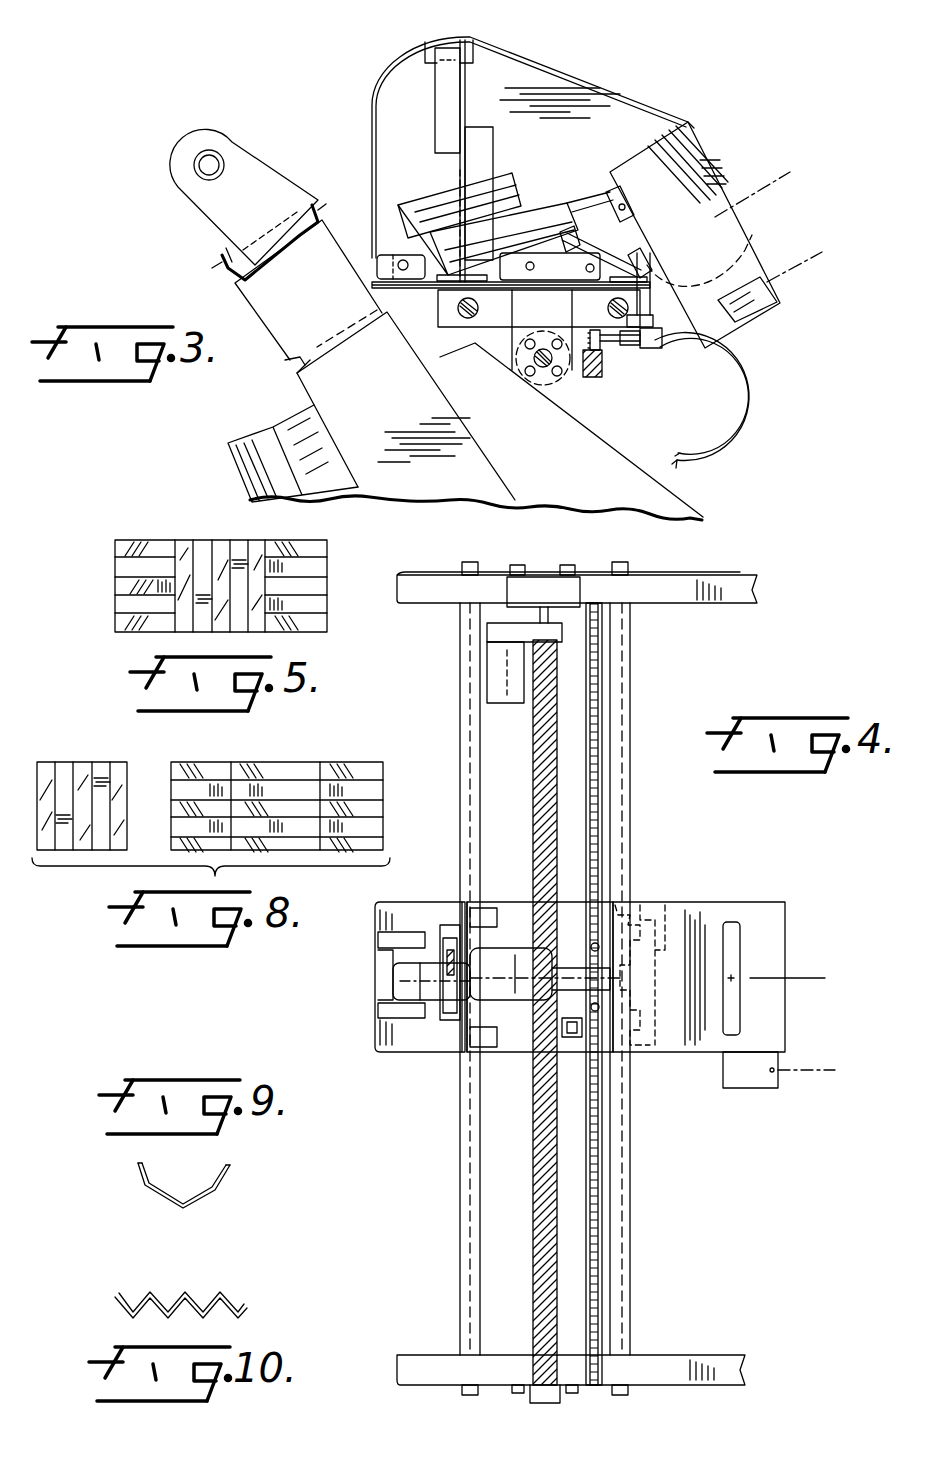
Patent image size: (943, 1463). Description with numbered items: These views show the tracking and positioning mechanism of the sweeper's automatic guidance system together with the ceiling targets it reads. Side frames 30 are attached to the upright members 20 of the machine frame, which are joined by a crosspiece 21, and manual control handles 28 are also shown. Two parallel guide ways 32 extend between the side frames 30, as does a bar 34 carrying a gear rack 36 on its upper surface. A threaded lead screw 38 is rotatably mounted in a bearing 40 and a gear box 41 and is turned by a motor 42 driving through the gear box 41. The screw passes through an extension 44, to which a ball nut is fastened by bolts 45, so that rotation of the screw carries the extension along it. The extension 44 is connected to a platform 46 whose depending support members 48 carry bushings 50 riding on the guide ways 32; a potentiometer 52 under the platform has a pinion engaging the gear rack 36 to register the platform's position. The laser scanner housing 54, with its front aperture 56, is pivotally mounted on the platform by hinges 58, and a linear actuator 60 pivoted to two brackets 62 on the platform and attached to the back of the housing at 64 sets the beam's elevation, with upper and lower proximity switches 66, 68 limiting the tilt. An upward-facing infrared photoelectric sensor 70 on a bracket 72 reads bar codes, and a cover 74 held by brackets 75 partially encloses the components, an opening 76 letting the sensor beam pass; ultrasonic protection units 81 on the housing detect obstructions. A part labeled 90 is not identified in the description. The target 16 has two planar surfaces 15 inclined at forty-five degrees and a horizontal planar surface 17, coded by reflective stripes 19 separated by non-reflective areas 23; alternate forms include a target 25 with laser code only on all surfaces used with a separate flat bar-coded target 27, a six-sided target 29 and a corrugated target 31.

In FIG. 5, the planar surfaces 15 is at (150, 540).
In FIG. 5, the target 16 is at (102, 531).
In FIG. 5, the horizontal planar surface 17 is at (203, 540).
In FIG. 5, the reflective stripes 19 is at (256, 550).
In FIG. 8, the reflective stripes 19 is at (85, 760).
In FIG. 3, the upright members 20 is at (427, 486).
In FIG. 3, the crosspiece 21 is at (296, 366).
In FIG. 5, the non-reflective areas 23 is at (318, 600).
In FIG. 8, the non-reflective areas 23 is at (175, 828).
In FIG. 8, the target 25 is at (300, 762).
In FIG. 8, the flat target 27 is at (122, 775).
In FIG. 3, the handles 28 is at (197, 160).
In FIG. 9, the six-sided target 29 is at (220, 1196).
In FIG. 3, the side frames 30 is at (700, 498).
In FIG. 4, the side frames 30 is at (737, 572).
In FIG. 10, the corrugated target 31 is at (248, 1312).
In FIG. 3, the guide ways 32 is at (607, 308).
In FIG. 4, the guide ways 32 is at (458, 1170).
In FIG. 3, the bar 34 is at (596, 378).
In FIG. 4, the bar 34 is at (605, 1275).
In FIG. 3, the gear rack 36 is at (600, 352).
In FIG. 4, the gear rack 36 is at (600, 1148).
In FIG. 3, the lead screw 38 is at (598, 372).
In FIG. 4, the lead screw 38 is at (536, 806).
In FIG. 4, the bearing 40 is at (535, 1385).
In FIG. 4, the gear box 41 is at (494, 635).
In FIG. 4, the motor 42 is at (500, 695).
In FIG. 3, the extension 44 is at (543, 386).
In FIG. 3, the bolts 45 is at (531, 378).
In FIG. 3, the platform 46 is at (374, 293).
In FIG. 4, the platform 46 is at (377, 1036).
In FIG. 3, the support members 48 is at (410, 340).
In FIG. 3, the bushings 50 is at (466, 318).
In FIG. 3, the potentiometer 52 is at (670, 385).
In FIG. 3, the laser scanner housing 54 is at (688, 168).
In FIG. 4, the laser scanner housing 54 is at (690, 905).
In FIG. 4, the front aperture 56 is at (735, 925).
In FIG. 3, the hinges 58 is at (642, 254).
In FIG. 3, the linear actuator 60 is at (537, 215).
In FIG. 4, the linear actuator 60 is at (540, 965).
In FIG. 3, the brackets 62 is at (378, 252).
In FIG. 4, the brackets 62 is at (390, 1000).
In FIG. 3, the pivotal attachment 64 is at (606, 200).
In FIG. 3, the upper proximity switch 66 is at (580, 228).
In FIG. 4, the upper proximity switch 66 is at (563, 1028).
In FIG. 3, the lower proximity switch 68 is at (652, 328).
In FIG. 3, the infrared photoelectric sensor 70 is at (436, 98).
In FIG. 4, the infrared photoelectric sensor 70 is at (438, 1025).
In FIG. 3, the bracket 72 is at (459, 162).
In FIG. 4, the bracket 72 is at (462, 905).
In FIG. 3, the cover 74 is at (371, 128).
In FIG. 3, the brackets 75 is at (540, 268).
In FIG. 4, the brackets 75 is at (525, 905).
In FIG. 3, the opening 76 is at (462, 38).
In FIG. 3, the ultrasonic protection units 81 is at (760, 300).
In FIG. 4, the ultrasonic protection units 81 is at (742, 1088).
In FIG. 3, the pad 90 is at (245, 440).